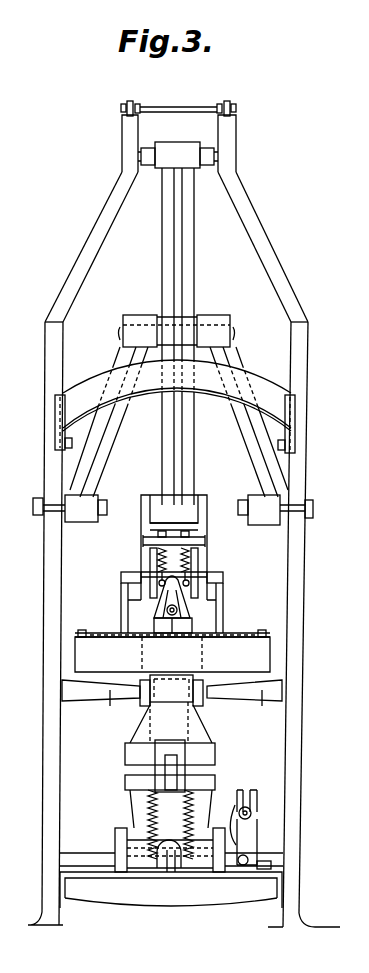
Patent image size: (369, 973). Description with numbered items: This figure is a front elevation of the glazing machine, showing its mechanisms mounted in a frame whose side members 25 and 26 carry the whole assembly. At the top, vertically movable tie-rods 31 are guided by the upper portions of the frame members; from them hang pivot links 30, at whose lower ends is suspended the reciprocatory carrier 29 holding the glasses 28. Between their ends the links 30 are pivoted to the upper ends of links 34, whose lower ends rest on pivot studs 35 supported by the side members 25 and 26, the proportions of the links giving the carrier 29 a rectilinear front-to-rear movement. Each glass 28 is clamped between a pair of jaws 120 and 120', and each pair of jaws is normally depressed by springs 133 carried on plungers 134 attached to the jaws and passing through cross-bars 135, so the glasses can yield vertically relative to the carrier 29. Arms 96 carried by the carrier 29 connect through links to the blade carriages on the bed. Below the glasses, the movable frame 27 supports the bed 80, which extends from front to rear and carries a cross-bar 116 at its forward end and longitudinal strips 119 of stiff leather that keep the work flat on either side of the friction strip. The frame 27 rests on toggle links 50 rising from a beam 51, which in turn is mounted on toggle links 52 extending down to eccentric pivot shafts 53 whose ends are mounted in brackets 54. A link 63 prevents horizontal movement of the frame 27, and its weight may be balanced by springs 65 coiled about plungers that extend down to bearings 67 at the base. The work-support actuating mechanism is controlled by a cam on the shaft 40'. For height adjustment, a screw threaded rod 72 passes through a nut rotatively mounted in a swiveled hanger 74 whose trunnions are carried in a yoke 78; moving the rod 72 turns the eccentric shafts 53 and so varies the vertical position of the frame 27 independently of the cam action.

The side member 25 is at (45, 649).
The side member 26 is at (303, 676).
The movable frame 27 is at (202, 705).
The glasses 28 is at (193, 626).
The carrier 29 is at (205, 505).
The pivot links 30 is at (195, 290).
The tie-rods 31 is at (210, 139).
The links 34 is at (108, 453).
The pivot studs 35 is at (33, 503).
The shaft 40' is at (148, 482).
The toggle links 50 is at (171, 709).
The beam 51 is at (150, 753).
The toggle links 52 is at (130, 800).
The eccentric pivot shafts 53 is at (166, 874).
The brackets 54 is at (115, 838).
The link 63 is at (172, 704).
The springs 65 is at (176, 875).
The bearings 67 is at (66, 862).
The screw threaded rod 72 is at (253, 808).
The swiveled hanger 74 is at (246, 806).
The yoke 78 is at (260, 824).
The bed 80 is at (208, 662).
The arms 96 is at (125, 606).
The cross-bar 116 is at (108, 654).
The longitudinal strips 119 is at (80, 630).
The jaw 120 is at (159, 601).
The jaw 120' is at (172, 654).
The springs 133 is at (190, 550).
The plungers 134 is at (200, 564).
The cross-bars 135 is at (150, 536).